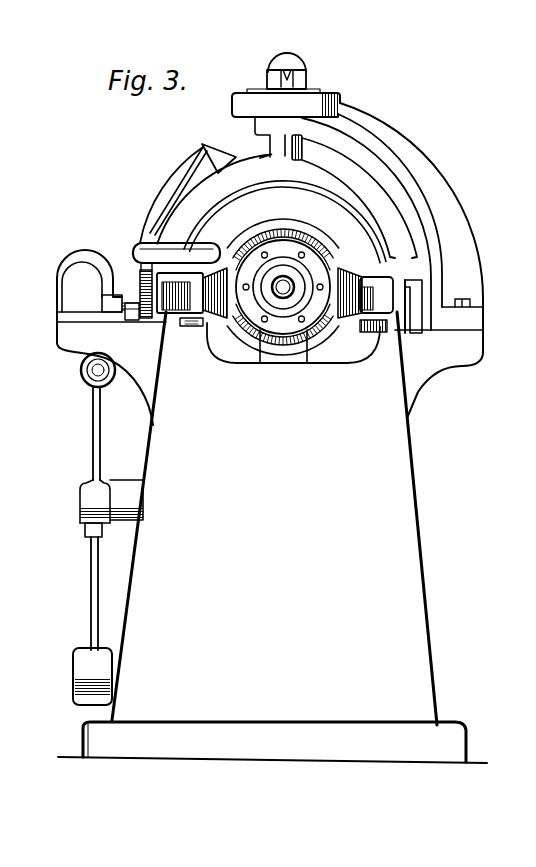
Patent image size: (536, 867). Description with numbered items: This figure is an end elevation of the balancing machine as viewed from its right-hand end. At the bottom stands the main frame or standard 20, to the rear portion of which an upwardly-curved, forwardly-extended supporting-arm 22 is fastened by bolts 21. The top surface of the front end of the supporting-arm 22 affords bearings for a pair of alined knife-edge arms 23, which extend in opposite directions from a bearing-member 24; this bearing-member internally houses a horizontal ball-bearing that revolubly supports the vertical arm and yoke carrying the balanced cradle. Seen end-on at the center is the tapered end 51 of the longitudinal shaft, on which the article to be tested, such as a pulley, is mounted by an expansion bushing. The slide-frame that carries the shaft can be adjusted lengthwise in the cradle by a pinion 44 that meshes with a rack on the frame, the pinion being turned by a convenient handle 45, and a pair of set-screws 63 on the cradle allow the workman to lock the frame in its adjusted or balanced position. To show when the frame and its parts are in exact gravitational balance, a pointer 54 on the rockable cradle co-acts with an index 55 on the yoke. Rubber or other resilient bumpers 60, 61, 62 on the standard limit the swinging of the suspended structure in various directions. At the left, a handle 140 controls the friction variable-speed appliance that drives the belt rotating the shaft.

The main frame or standard 20 is at (272, 537).
The bolts 21 is at (470, 299).
The supporting-arm 22 is at (415, 171).
The knife-edge arms 23 is at (268, 76).
The bearing-member 24 is at (307, 82).
The pinion 44 is at (168, 312).
The handle 45 is at (143, 243).
The tapered end of shaft 51 is at (283, 296).
The pointer 54 is at (178, 171).
The index 55 is at (203, 144).
The bumper 60 is at (192, 327).
The bumper 61 is at (372, 333).
The bumper 62 is at (408, 293).
The set-screws 63 is at (142, 318).
The handle 140 is at (82, 376).